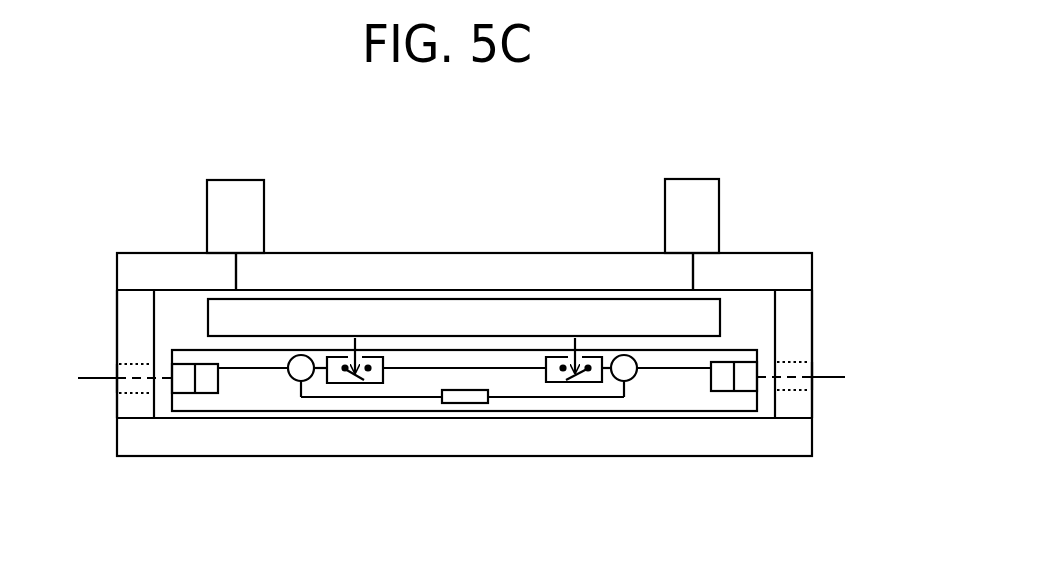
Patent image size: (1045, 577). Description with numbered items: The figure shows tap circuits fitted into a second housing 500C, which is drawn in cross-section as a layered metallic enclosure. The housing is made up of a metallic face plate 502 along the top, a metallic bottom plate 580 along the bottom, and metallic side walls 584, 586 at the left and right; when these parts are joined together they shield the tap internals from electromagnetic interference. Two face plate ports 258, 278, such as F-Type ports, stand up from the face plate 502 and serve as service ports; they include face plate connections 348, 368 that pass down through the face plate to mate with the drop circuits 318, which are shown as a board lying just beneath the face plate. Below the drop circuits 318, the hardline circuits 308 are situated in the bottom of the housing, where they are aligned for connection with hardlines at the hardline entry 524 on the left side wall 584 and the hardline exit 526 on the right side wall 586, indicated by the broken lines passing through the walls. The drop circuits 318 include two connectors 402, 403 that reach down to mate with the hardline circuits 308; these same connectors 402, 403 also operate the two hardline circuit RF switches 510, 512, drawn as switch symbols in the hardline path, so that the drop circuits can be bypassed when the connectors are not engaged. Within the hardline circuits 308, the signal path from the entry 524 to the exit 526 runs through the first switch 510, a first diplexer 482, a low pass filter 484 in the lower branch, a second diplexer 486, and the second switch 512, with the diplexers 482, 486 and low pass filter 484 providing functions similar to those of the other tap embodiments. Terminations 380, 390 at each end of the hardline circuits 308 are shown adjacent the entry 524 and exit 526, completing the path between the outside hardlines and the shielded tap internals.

The second housing 500C is at (778, 122).
The face plate port 258 is at (250, 222).
The face plate port 278 is at (665, 225).
The face plate connection 348 is at (234, 293).
The face plate connection 368 is at (695, 292).
The metallic face plate 502 is at (798, 276).
The metallic side wall 586 is at (805, 315).
The hardline exit 526 is at (822, 357).
The metallic side wall 584 is at (123, 338).
The hardline entry 524 is at (92, 393).
The metallic bottom plate 580 is at (125, 433).
The drop circuits 318 is at (676, 327).
The hardline circuits 308 is at (688, 398).
The first connector 380 is at (210, 385).
The second connector 390 is at (723, 377).
The diplexer 482 is at (295, 383).
The diplexer 486 is at (633, 378).
The low pass filter 484 is at (468, 397).
The hardline circuit RF switch 510 is at (373, 388).
The hardline circuit RF switch 512 is at (583, 387).
The connector 402 is at (358, 343).
The connector 403 is at (575, 338).